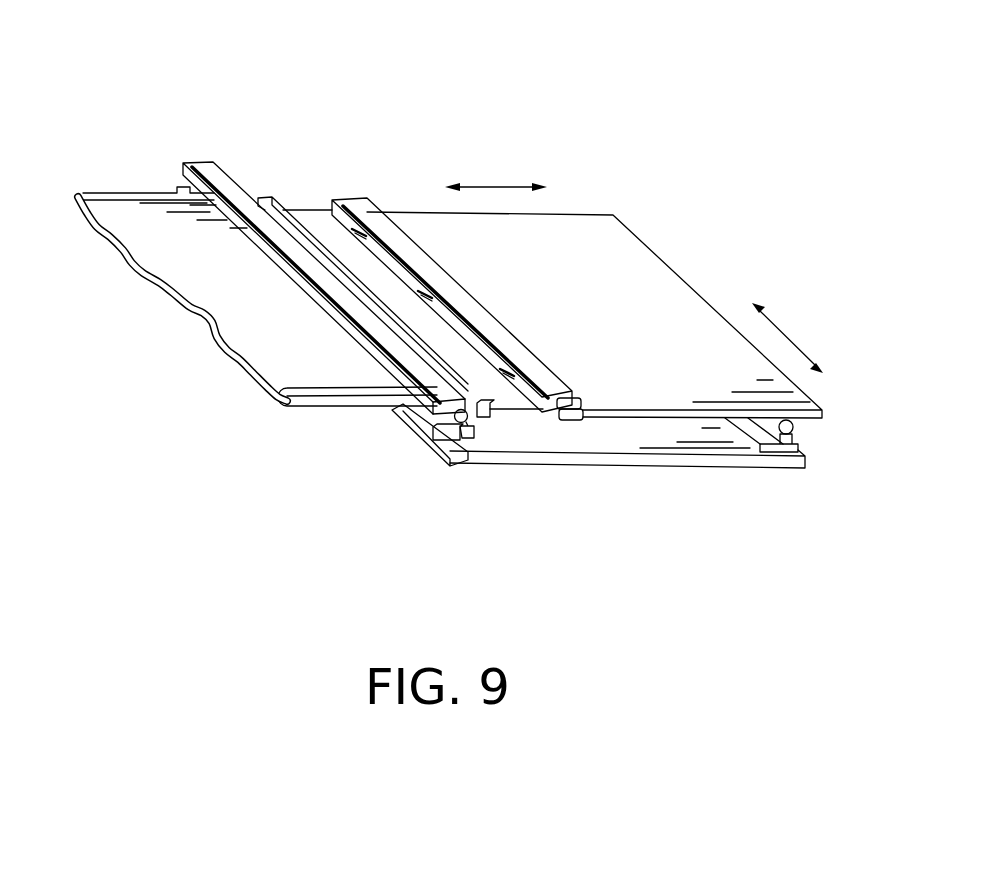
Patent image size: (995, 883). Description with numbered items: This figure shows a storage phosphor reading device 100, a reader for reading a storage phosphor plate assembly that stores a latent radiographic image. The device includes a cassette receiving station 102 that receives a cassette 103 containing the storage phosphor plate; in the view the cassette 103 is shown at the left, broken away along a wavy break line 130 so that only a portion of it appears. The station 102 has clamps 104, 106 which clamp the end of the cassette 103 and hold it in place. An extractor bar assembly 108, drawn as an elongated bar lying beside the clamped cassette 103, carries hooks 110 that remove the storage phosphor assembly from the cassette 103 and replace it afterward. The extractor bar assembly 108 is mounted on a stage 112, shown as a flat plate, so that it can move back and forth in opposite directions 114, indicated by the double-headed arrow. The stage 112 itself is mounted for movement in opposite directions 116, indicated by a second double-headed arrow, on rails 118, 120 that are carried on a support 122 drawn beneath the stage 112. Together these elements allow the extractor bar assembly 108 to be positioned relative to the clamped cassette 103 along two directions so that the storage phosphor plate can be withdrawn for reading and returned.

The storage phosphor reading device 100 is at (476, 63).
The cassette receiving station 102 is at (264, 175).
The cassette 103 is at (115, 205).
The clamp 104 is at (418, 420).
The clamp 106 is at (342, 312).
The extractor bar assembly 108 is at (516, 308).
The hooks 110 is at (425, 284).
The stage 112 is at (694, 291).
The opposite directions 114 is at (493, 187).
The opposite directions 116 is at (787, 337).
The rail 118 is at (780, 447).
The rail 120 is at (468, 422).
The support 122 is at (647, 462).
The break line 130 is at (207, 318).